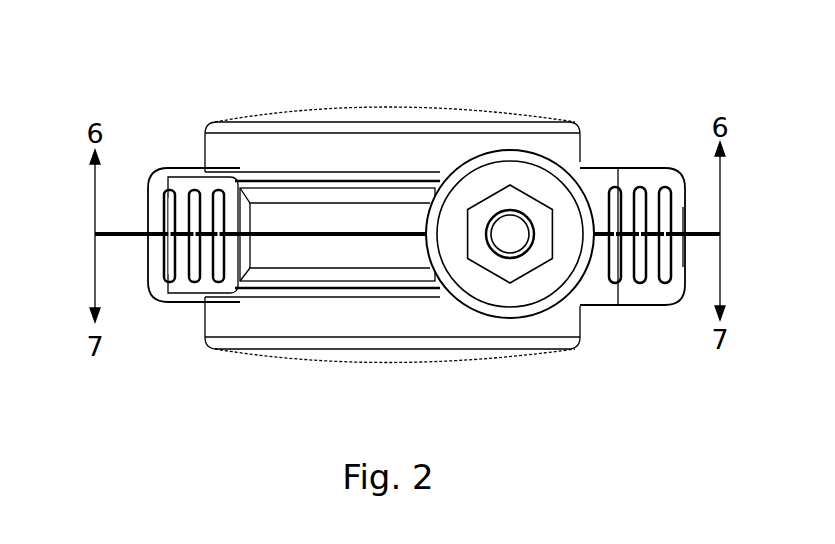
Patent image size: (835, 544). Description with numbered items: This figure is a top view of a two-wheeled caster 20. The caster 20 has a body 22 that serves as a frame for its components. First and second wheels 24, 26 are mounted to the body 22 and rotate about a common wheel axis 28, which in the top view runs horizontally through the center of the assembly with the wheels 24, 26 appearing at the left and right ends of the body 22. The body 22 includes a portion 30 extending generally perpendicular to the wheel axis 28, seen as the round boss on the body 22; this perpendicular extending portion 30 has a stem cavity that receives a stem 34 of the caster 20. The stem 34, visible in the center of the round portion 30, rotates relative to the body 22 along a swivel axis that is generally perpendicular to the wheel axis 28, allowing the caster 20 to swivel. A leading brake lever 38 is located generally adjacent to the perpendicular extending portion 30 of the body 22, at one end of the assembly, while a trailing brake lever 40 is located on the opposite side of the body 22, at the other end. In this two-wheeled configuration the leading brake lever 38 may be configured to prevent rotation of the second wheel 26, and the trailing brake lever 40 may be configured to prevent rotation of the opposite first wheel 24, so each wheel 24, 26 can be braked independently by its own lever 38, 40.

The caster 20 is at (198, 73).
The body 22 is at (363, 225).
The first wheel 24 is at (270, 337).
The second wheel 26 is at (453, 122).
The wheel axis 28 is at (381, 107).
The perpendicular extending portion 30 is at (573, 168).
The stem 34 is at (510, 210).
The leading brake lever 38 is at (638, 170).
The trailing brake lever 40 is at (173, 168).